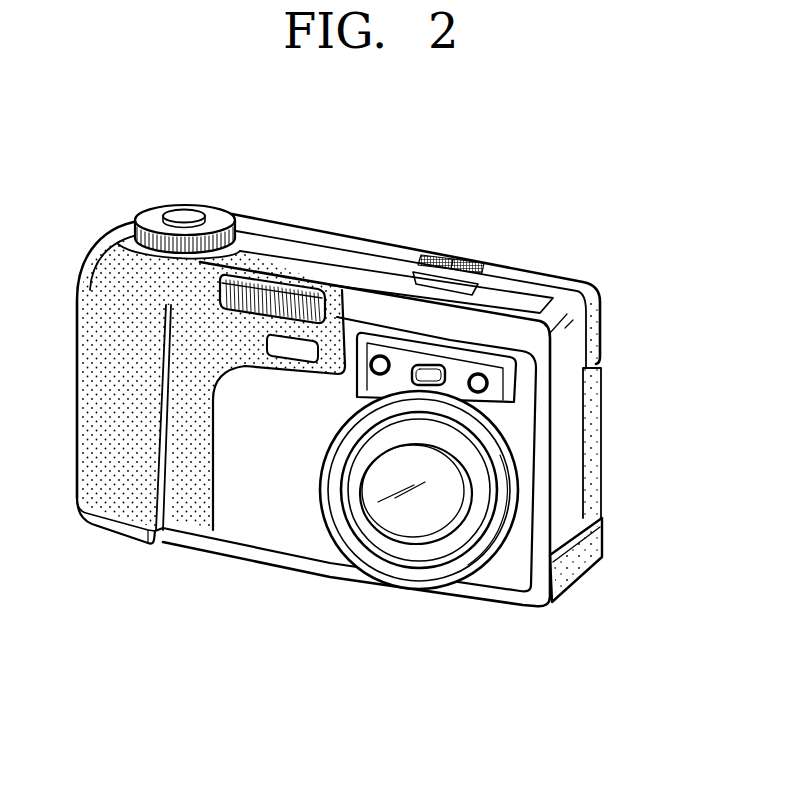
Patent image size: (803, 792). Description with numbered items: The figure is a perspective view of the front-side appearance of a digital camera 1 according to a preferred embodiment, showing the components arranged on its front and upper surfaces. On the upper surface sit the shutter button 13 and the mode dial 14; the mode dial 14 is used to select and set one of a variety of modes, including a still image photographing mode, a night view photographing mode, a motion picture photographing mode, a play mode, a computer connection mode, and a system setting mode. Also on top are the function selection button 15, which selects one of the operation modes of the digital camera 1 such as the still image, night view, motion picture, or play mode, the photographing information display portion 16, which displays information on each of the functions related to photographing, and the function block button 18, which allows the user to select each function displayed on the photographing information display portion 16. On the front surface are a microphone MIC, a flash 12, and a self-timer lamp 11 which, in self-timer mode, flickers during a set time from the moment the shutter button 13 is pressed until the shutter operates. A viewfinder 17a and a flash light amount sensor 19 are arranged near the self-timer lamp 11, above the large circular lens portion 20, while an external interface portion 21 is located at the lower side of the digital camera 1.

The digital camera 1 is at (268, 632).
The self-timer lamp 11 is at (380, 358).
The flash 12 is at (270, 290).
The microphone MIC is at (295, 347).
The shutter button 13 is at (185, 213).
The mode dial 14 is at (150, 220).
The function selection button 15 is at (441, 253).
The photographing information display portion 16 is at (448, 280).
The viewfinder 17a is at (437, 370).
The function block button 18 is at (473, 263).
The flash light amount sensor 19 is at (489, 384).
The lens portion 20 is at (433, 498).
The external interface portion 21 is at (597, 543).